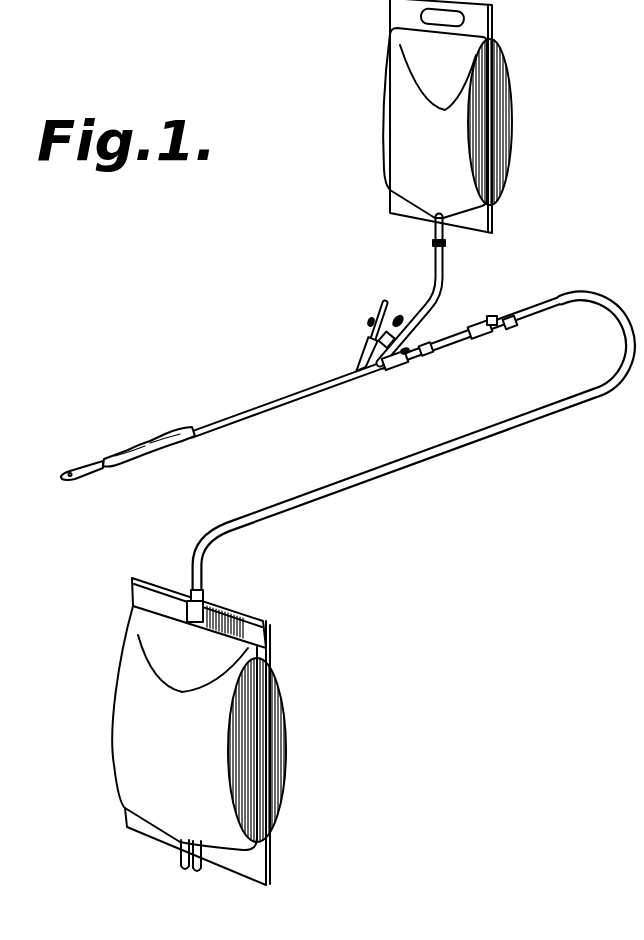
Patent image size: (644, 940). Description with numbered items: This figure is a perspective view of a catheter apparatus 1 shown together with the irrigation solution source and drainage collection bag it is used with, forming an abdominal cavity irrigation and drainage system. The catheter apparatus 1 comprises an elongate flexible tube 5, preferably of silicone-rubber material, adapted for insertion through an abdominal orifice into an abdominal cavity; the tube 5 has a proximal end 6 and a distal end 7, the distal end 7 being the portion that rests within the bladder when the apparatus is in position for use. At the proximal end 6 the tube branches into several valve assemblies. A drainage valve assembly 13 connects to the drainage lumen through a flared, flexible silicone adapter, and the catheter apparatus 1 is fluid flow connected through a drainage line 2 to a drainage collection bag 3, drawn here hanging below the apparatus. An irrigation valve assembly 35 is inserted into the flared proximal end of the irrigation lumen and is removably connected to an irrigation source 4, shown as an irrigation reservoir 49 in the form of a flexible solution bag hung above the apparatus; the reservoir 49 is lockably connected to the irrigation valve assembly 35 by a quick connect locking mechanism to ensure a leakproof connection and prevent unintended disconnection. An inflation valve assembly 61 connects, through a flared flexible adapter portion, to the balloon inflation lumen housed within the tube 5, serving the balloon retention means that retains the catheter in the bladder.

The catheter apparatus 1 is at (222, 427).
The drainage line 2 is at (398, 475).
The drainage collection bag 3 is at (263, 733).
The irrigation source 4 is at (445, 116).
The irrigation reservoir 49 is at (495, 43).
The elongate flexible tube 5 is at (230, 427).
The proximal end 6 is at (375, 372).
The inflation valve assembly 61 is at (383, 306).
The irrigation valve assembly 35 is at (410, 320).
The drainage valve assembly 13 is at (412, 362).
The distal end 7 is at (84, 477).